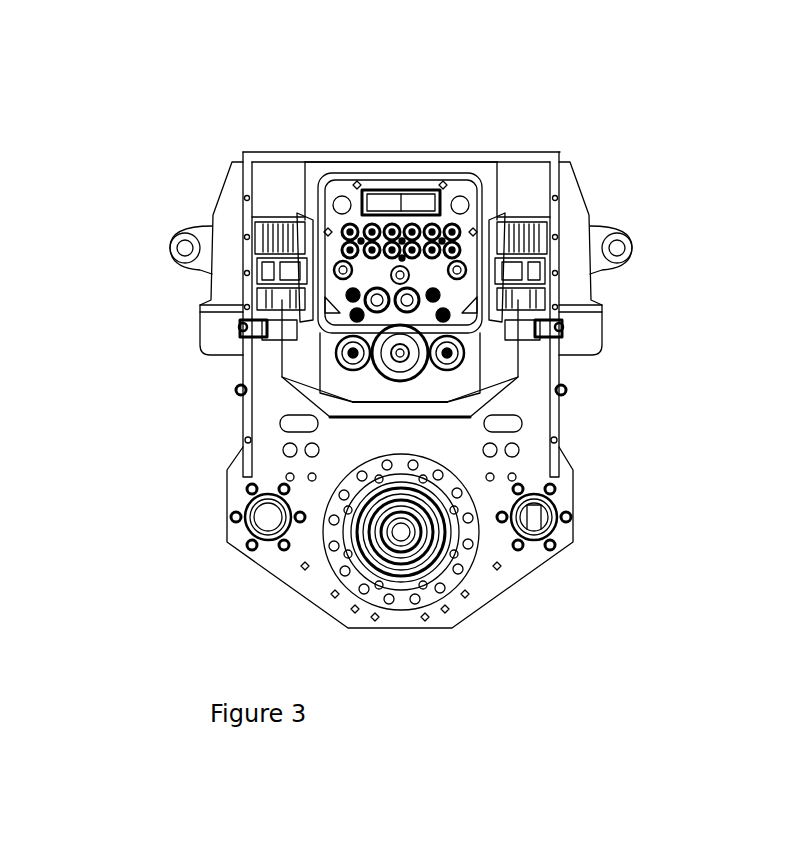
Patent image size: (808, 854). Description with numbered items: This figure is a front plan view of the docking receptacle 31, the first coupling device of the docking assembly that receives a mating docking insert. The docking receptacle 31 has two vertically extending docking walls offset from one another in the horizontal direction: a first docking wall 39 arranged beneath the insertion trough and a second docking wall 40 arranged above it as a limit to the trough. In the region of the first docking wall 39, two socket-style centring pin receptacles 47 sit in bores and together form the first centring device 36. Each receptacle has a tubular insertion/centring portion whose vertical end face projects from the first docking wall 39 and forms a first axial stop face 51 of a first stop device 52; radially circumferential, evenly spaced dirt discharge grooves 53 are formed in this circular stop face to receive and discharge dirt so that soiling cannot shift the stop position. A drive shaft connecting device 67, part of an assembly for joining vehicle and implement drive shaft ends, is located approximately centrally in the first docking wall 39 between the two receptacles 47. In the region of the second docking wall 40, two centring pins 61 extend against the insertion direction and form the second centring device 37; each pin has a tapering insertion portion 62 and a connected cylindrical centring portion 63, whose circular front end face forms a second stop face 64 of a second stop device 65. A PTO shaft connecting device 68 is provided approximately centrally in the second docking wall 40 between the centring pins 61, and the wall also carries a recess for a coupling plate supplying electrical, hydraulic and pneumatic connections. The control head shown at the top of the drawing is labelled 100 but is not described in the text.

The docking receptacle 31 is at (216, 130).
The control head unit 100 is at (413, 187).
The second docking wall 40 is at (478, 165).
The PTO shaft connecting device 68 is at (425, 337).
The centring pins 61 is at (598, 333).
The insertion portion 62 is at (598, 333).
The cylindrical centring portion 63 is at (463, 353).
The second centring device 37 is at (465, 358).
The second stop face 64 is at (226, 372).
The second stop device 65 is at (337, 353).
The first axial stop face 51 is at (192, 491).
The first stop device 52 is at (247, 503).
The socket-style centring pin receptacles 47 is at (262, 519).
The dirt discharge grooves 53 is at (242, 548).
The first centring device 36 is at (560, 503).
The first docking wall 39 is at (495, 545).
The drive shaft connecting device 67 is at (438, 562).